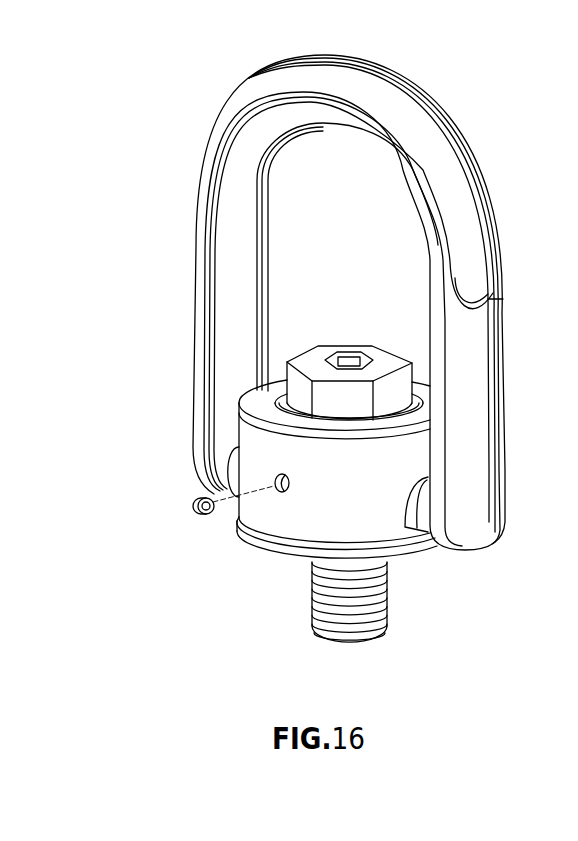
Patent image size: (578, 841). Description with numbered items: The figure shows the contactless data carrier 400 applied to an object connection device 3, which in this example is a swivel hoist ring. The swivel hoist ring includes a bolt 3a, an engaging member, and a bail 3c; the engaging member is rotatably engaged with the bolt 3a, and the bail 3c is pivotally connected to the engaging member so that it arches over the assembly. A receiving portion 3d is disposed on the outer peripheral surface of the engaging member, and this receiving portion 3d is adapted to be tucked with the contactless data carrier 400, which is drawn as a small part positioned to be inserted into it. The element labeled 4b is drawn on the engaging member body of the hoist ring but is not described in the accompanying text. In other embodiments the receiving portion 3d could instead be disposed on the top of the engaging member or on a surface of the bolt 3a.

The object connection device 3 is at (185, 160).
The bolt 3a is at (355, 350).
The bail 3c is at (457, 180).
The receiving portion 3d is at (276, 478).
The swivel body 4b is at (300, 520).
The contactless data carrier 400 is at (195, 510).